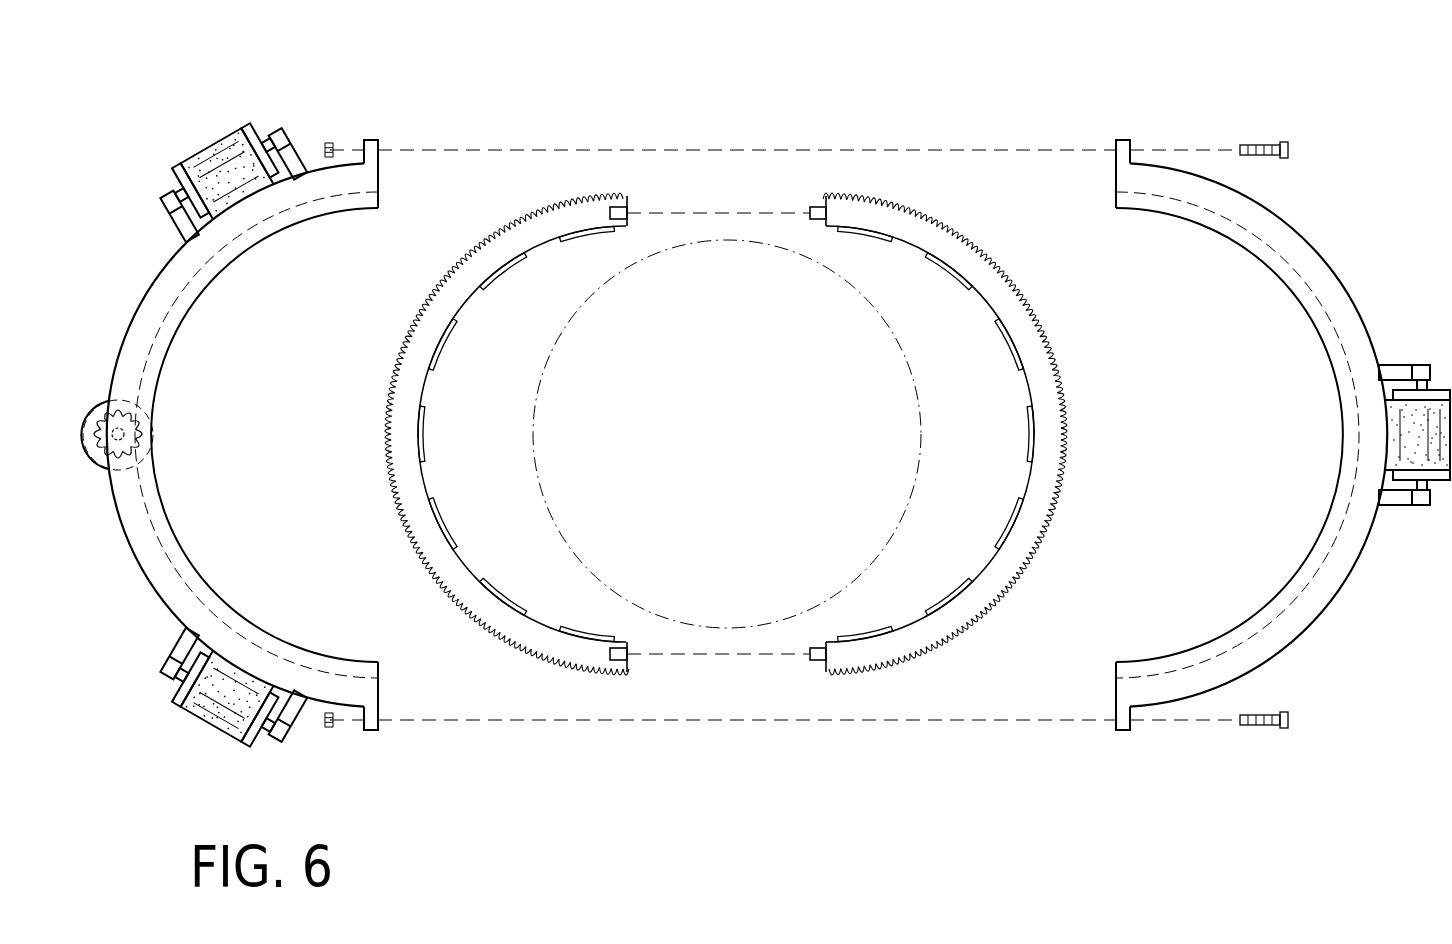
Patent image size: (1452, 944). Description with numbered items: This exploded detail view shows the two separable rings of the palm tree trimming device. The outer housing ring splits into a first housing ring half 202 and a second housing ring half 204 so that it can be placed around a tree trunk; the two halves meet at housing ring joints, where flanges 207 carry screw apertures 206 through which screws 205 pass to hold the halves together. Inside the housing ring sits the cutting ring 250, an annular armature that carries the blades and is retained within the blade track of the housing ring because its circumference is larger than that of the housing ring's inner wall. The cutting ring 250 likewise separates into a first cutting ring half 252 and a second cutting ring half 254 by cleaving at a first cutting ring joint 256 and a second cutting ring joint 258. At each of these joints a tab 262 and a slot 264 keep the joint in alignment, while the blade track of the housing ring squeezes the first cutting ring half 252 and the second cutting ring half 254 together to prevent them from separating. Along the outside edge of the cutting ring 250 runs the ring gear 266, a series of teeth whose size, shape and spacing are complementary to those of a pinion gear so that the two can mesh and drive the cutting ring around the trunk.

The first housing ring half 202 is at (175, 323).
The second housing ring half 204 is at (1238, 636).
The screws 205 is at (1270, 148).
The screw apertures 206 is at (1132, 155).
The flanges 207 is at (774, 417).
The cutting ring 250 is at (762, 434).
The first cutting ring half 252 is at (476, 416).
The second cutting ring half 254 is at (1063, 392).
The first cutting ring joint 256 is at (822, 197).
The second cutting ring joint 258 is at (817, 645).
The tab 262 is at (812, 213).
The slot 264 is at (612, 213).
The ring gear 266 is at (434, 292).